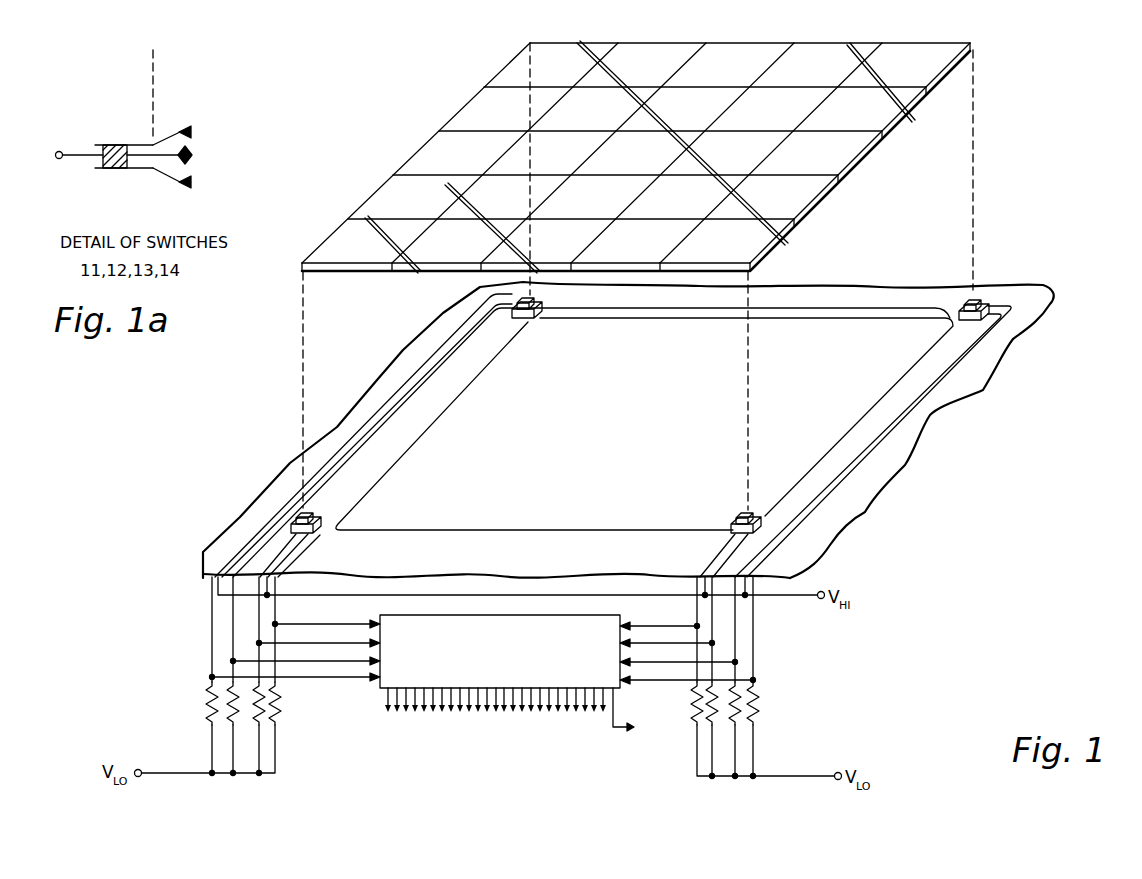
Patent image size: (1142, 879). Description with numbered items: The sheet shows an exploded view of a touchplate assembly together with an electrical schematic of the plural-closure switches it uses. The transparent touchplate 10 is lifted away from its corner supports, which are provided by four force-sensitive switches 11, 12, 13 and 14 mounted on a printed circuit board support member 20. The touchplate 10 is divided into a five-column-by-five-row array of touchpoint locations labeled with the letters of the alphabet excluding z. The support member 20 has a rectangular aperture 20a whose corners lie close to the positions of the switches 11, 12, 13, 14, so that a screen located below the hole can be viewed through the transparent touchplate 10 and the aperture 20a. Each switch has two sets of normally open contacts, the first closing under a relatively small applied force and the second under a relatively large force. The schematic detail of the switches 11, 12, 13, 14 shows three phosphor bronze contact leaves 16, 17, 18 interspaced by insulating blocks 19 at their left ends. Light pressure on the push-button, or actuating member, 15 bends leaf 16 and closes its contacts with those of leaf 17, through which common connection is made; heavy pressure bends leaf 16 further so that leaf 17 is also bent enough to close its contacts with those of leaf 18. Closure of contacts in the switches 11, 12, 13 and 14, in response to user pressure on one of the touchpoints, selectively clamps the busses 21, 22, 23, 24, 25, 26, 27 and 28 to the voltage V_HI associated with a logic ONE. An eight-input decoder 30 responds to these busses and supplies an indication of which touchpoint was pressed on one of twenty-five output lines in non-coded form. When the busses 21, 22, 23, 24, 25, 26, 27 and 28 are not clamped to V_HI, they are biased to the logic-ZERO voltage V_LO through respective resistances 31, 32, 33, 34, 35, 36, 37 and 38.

In FIG. 1, the transparent touchplate 10 is at (840, 178).
In FIG. 1A, the force-sensitive switch 11 is at (121, 153).
In FIG. 1, the force-sensitive switch 11 is at (528, 318).
In FIG. 1A, the force-sensitive switch 12 is at (121, 153).
In FIG. 1, the force-sensitive switch 12 is at (308, 535).
In FIG. 1A, the force-sensitive switch 13 is at (121, 153).
In FIG. 1, the force-sensitive switch 13 is at (728, 530).
In FIG. 1A, the force-sensitive switch 14 is at (121, 153).
In FIG. 1, the force-sensitive switch 14 is at (968, 293).
In FIG. 1A, the push-button 15 is at (153, 91).
In FIG. 1A, the contact leaf 16 is at (188, 122).
In FIG. 1A, the contact leaf 17 is at (200, 155).
In FIG. 1A, the contact leaf 18 is at (188, 185).
In FIG. 1A, the insulating block 19 is at (96, 146).
In FIG. 1, the printed circuit board support member 20 is at (920, 440).
In FIG. 1, the rectangular aperture 20a is at (808, 318).
In FIG. 1, the bus 21 is at (325, 677).
In FIG. 1, the bus 22 is at (322, 643).
In FIG. 1, the bus 23 is at (655, 626).
In FIG. 1, the bus 24 is at (717, 662).
In FIG. 1, the bus 25 is at (292, 661).
In FIG. 1, the bus 26 is at (281, 624).
In FIG. 1, the bus 27 is at (658, 643).
In FIG. 1, the bus 28 is at (746, 680).
In FIG. 1, the eight-input decoder 30 is at (601, 686).
In FIG. 1, the resistance 31 is at (207, 694).
In FIG. 1, the resistance 32 is at (256, 725).
In FIG. 1, the resistance 33 is at (692, 702).
In FIG. 1, the resistance 34 is at (738, 725).
In FIG. 1, the resistance 35 is at (228, 725).
In FIG. 1, the resistance 36 is at (278, 722).
In FIG. 1, the resistance 37 is at (716, 725).
In FIG. 1, the resistance 38 is at (756, 702).